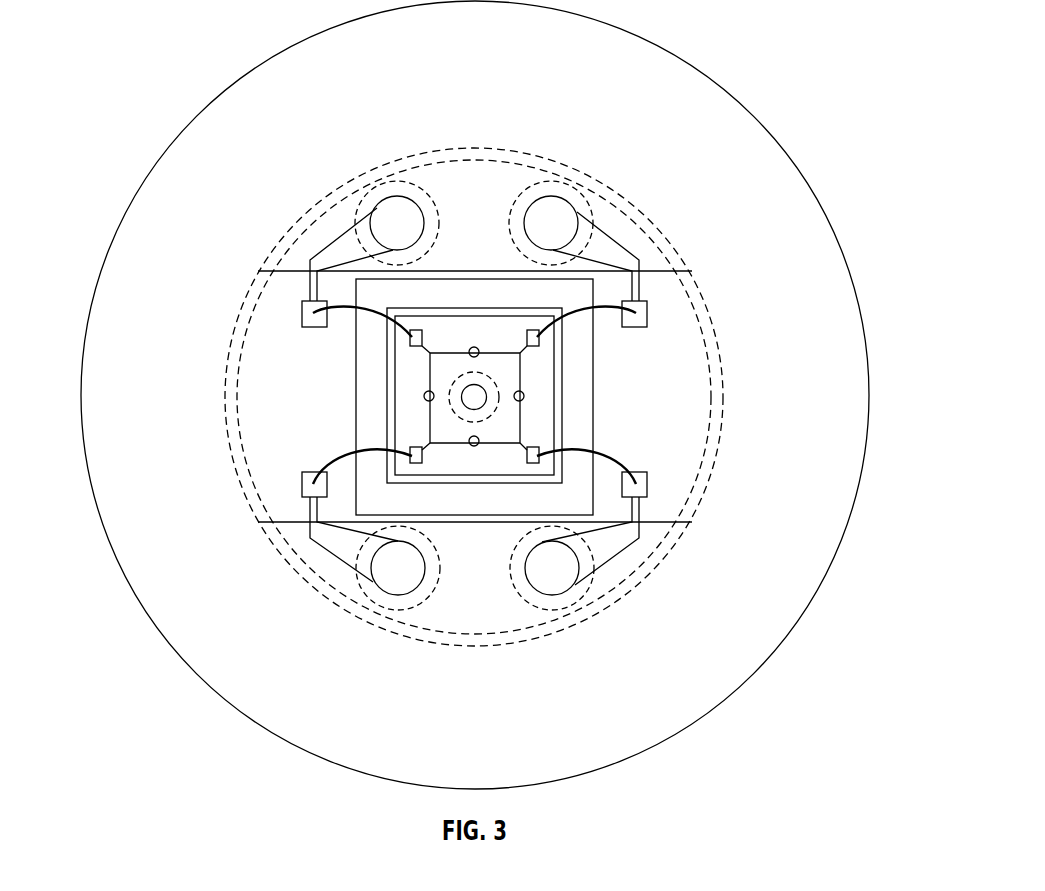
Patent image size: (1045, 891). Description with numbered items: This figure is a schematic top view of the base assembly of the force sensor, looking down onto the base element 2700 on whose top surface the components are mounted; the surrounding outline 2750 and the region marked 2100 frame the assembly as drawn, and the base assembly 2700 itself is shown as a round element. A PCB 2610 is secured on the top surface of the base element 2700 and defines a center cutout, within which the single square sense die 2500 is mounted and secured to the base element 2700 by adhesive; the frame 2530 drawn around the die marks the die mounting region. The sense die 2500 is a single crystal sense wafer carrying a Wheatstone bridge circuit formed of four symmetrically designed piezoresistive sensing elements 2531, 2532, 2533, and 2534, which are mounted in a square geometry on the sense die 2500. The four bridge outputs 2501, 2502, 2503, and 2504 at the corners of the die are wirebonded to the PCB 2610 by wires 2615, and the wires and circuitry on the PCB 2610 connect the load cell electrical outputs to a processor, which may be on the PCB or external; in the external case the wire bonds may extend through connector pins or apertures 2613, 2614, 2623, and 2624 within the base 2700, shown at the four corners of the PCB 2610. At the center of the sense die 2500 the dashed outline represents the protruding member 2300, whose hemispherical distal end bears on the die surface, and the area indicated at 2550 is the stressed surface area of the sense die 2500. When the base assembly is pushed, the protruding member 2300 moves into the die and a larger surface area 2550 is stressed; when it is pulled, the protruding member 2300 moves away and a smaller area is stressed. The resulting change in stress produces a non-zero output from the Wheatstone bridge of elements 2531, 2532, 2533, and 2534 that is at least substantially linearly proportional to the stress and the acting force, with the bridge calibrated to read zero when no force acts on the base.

The substrate support 2100 is at (155, 192).
The electrostatic chuck body 2750 is at (473, 394).
The base element 2700 is at (688, 306).
The PCB 2610 is at (265, 455).
The connector pin or aperture 2613 is at (577, 212).
The connector pin or aperture 2614 is at (377, 209).
The wire 2615 is at (605, 323).
The connector pin or aperture 2623 is at (557, 580).
The connector pin or aperture 2624 is at (384, 581).
The outer frame 2530 is at (593, 396).
The sense die 2500 is at (554, 417).
The bridge output 2501 is at (533, 330).
The bridge output 2502 is at (415, 330).
The bridge output 2503 is at (533, 463).
The bridge output 2504 is at (416, 463).
The piezoresistive sensing element 2531 is at (423, 418).
The piezoresistive sensing element 2532 is at (507, 343).
The piezoresistive sensing element 2533 is at (553, 418).
The piezoresistive sensing element 2534 is at (507, 473).
The protruding member 2300 is at (460, 373).
The stressed surface area 2550 is at (486, 404).